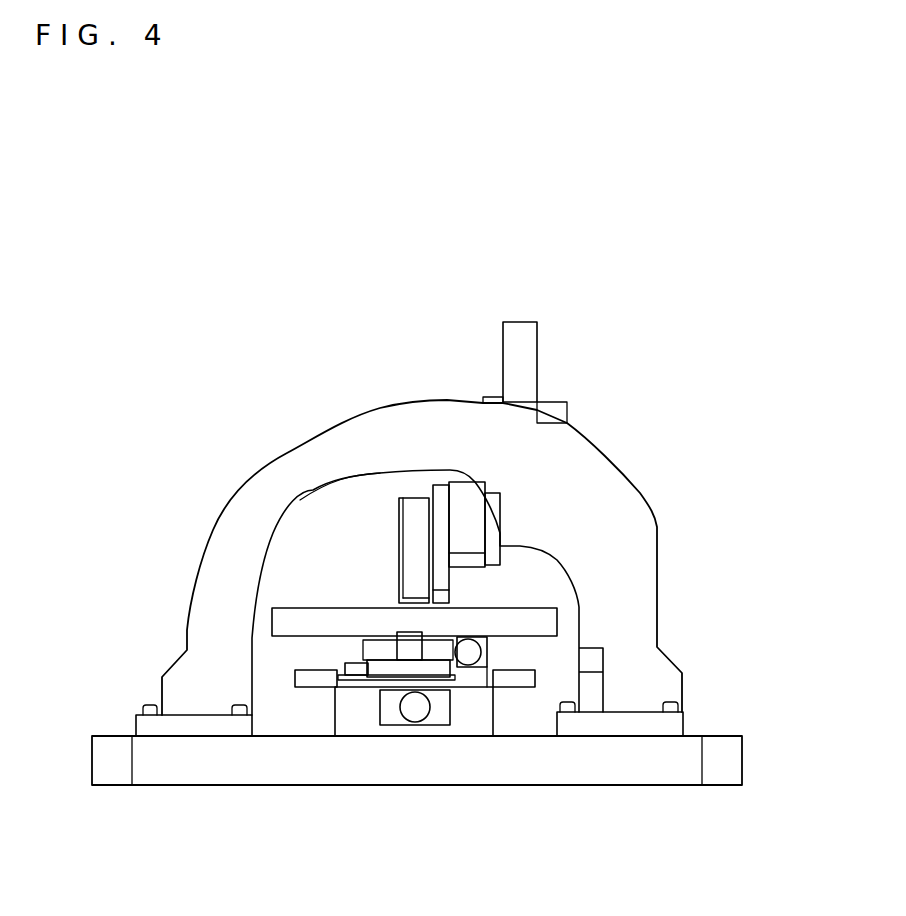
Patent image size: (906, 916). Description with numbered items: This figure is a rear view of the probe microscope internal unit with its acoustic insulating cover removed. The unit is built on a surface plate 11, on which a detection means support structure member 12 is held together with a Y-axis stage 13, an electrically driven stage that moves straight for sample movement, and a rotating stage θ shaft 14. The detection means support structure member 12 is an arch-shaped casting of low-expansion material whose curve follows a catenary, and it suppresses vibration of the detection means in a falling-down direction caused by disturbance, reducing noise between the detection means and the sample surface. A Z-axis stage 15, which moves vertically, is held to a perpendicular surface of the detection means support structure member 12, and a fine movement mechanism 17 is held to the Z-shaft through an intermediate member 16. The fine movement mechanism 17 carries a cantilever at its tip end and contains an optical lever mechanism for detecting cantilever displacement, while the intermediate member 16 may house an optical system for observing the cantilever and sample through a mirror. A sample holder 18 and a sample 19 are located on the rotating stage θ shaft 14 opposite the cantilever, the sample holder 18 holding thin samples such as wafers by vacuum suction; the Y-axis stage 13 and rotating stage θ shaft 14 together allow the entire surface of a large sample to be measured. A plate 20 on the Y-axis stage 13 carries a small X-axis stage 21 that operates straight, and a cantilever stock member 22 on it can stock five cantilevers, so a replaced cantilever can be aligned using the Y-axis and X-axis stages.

The surface plate 11 is at (653, 758).
The detection means support structure member 12 is at (623, 580).
The Y-axis stage 13 is at (413, 710).
The rotating stage θ shaft 14 is at (470, 657).
The Z-axis stage 15 is at (517, 368).
The intermediate member 16 is at (445, 493).
The fine movement mechanism 17 is at (413, 528).
The sample holder 18 is at (548, 622).
The sample 19 is at (377, 605).
The plate 20 is at (310, 678).
The small X-axis stage 21 is at (362, 670).
The cantilever stock member 22 is at (540, 631).